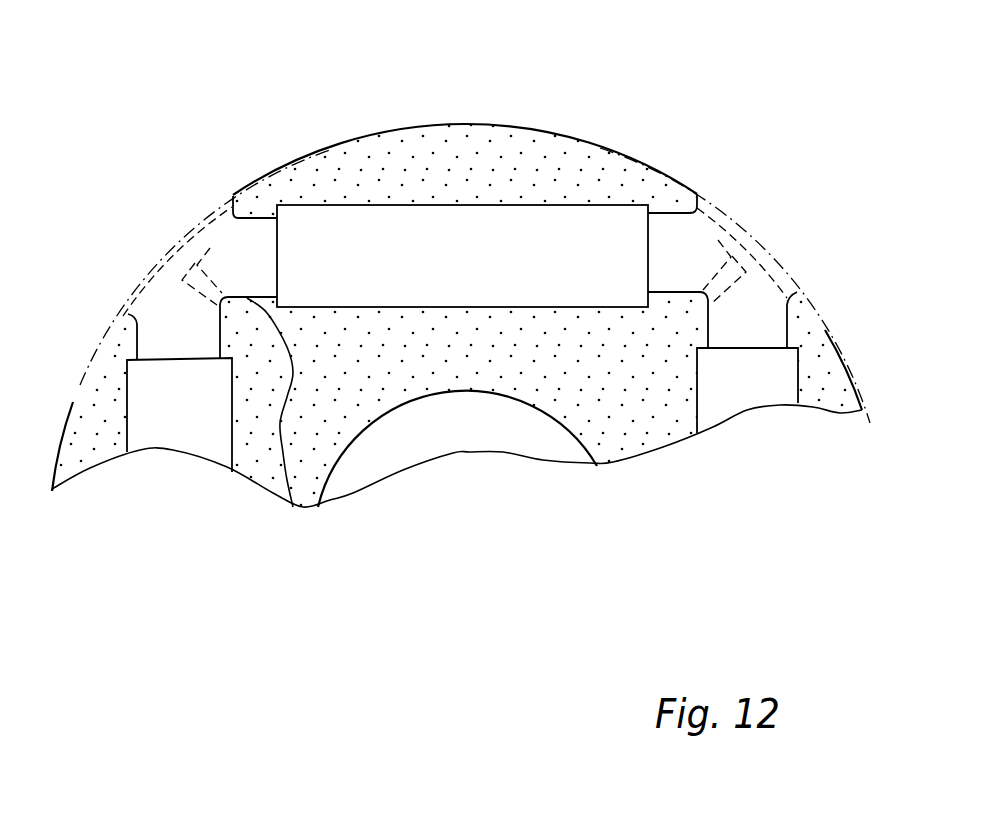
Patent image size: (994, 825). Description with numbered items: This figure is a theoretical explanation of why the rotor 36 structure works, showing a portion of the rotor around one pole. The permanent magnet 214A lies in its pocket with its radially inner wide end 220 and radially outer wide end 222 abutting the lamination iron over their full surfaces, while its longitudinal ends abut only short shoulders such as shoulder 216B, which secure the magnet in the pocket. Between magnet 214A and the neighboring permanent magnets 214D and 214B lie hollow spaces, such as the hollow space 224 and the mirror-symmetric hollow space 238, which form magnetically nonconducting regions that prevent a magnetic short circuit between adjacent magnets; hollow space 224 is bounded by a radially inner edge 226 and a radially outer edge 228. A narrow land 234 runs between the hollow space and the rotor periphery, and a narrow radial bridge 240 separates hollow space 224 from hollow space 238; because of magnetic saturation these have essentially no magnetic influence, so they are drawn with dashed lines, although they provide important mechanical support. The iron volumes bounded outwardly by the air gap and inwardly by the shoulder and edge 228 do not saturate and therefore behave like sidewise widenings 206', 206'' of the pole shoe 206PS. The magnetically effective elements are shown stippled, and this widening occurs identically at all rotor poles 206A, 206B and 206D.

The rotor 36 is at (340, 118).
The pole shoe 206PS is at (468, 150).
The rotor pole 206A is at (547, 126).
The sidewise widening of the pole shoe 206'' is at (720, 165).
The sidewise widening of the pole shoe 206' is at (207, 170).
The radially outer edge of hollow space 228 is at (239, 208).
The shoulder 216B is at (273, 211).
The narrow land 234 is at (213, 233).
The narrow radial bridge 240 is at (163, 262).
The hollow space (magnetically nonconducting region) 224 is at (262, 273).
The hollow space 238 is at (202, 343).
The radially outer wide end of magnet / outer pocket edge 222 is at (303, 207).
The radially inner wide end of magnet / inner pocket edge 220 is at (373, 307).
The permanent magnet 214A is at (600, 273).
The radially inner edge of hollow space 226 is at (290, 505).
The permanent magnet 214D is at (168, 428).
The permanent magnet 214B is at (737, 400).
The rotor pole 206D is at (92, 447).
The rotor pole 206B is at (820, 395).